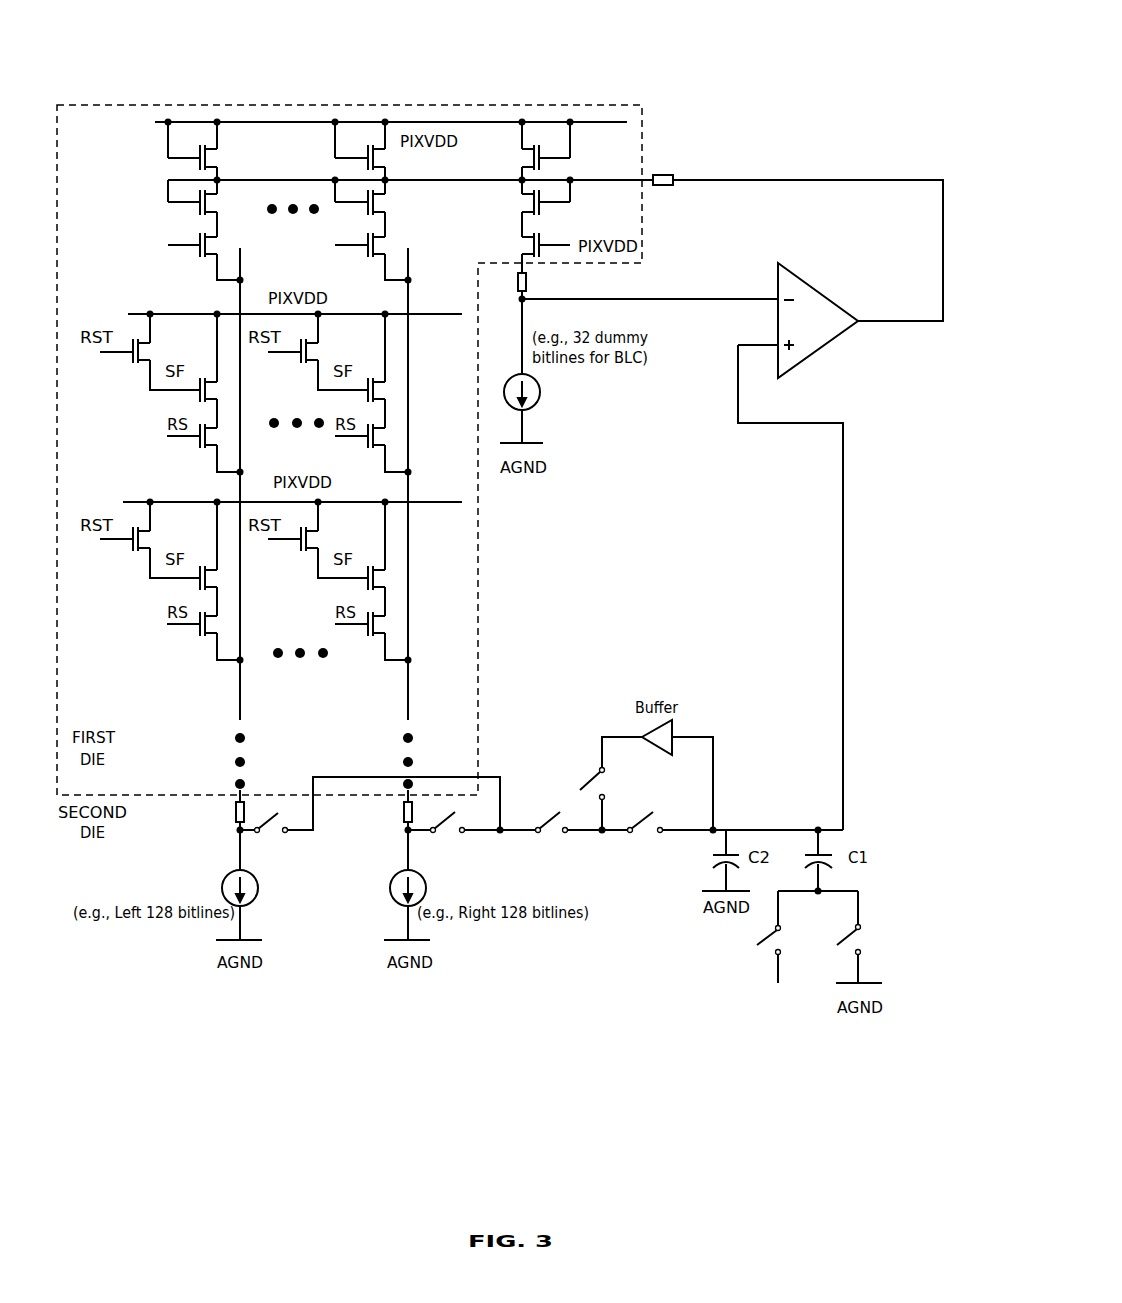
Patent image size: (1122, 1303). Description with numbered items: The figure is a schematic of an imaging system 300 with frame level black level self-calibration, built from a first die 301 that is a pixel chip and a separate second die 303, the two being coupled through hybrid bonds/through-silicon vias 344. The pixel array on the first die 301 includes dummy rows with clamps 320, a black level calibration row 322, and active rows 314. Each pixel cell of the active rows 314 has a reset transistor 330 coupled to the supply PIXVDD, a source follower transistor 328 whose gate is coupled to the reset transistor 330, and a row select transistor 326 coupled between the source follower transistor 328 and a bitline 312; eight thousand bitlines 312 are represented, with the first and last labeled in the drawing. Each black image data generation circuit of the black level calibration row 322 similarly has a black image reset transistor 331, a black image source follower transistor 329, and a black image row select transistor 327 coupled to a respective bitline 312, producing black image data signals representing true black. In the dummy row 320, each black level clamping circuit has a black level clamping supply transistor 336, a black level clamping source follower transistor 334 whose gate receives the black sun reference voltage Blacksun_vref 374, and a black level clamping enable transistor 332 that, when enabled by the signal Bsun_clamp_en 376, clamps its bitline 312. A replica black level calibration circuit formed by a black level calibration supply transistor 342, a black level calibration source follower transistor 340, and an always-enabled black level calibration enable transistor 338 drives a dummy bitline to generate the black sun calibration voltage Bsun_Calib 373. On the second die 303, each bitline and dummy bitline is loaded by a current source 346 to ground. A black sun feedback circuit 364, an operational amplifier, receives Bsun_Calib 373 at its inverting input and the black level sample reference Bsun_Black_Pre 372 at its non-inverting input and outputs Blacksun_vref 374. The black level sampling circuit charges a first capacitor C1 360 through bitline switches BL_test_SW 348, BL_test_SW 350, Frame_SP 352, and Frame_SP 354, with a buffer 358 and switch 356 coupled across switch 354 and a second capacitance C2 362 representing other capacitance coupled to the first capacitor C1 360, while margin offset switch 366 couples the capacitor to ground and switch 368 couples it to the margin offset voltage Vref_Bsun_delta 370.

The imaging system 300 is at (940, 38).
The first die 301 is at (106, 789).
The second die 303 is at (106, 861).
The bitline 312 is at (190, 708).
The active rows 314 is at (95, 676).
The dummy rows with clamps 320 is at (93, 152).
The black level calibration (BLC) row 322 is at (95, 440).
The row select transistor 326 is at (213, 638).
The black image row select transistor 327 is at (213, 450).
The source follower transistor 328 is at (196, 582).
The black image source follower transistor 329 is at (196, 396).
The reset transistor 330 is at (130, 546).
The black image reset transistor 331 is at (130, 360).
The black level clamping enable transistor 332 is at (196, 240).
The black level clamping source follower transistor 334 is at (212, 200).
The black level clamping supply transistor 336 is at (212, 160).
The black level calibration enable transistor 338 is at (523, 248).
The black level calibration source follower transistor 340 is at (523, 205).
The black level calibration supply transistor 342 is at (523, 162).
The hybrid bonds/through-silicon vias (TSVs) 344 is at (665, 187).
The current source 346 is at (542, 398).
The bitline switch BL_test_SW 348 is at (286, 857).
The bitline switch BL_test_SW 350 is at (456, 857).
The bitline switch Frame_SP 352 is at (543, 864).
The bitline switch Frame_SP 354 is at (639, 864).
The switch 356 is at (589, 772).
The buffer 358 is at (672, 698).
The first capacitor C1 360 is at (838, 870).
The capacitor C2 362 is at (710, 866).
The black sun feedback circuit 364 is at (833, 300).
The switch 366 is at (858, 940).
The switch 368 is at (769, 958).
The margin offset voltage Vref_Bsun_delta 370 is at (675, 1004).
The black level sample reference Bsun_Black_Pre 372 is at (712, 440).
The black sun calibration voltage Bsun_Calib 373 is at (692, 288).
The black sun reference voltage Blacksun_vref 374 is at (932, 160).
The black level clamping enable signal Bsun_clamp_en 376 is at (118, 272).